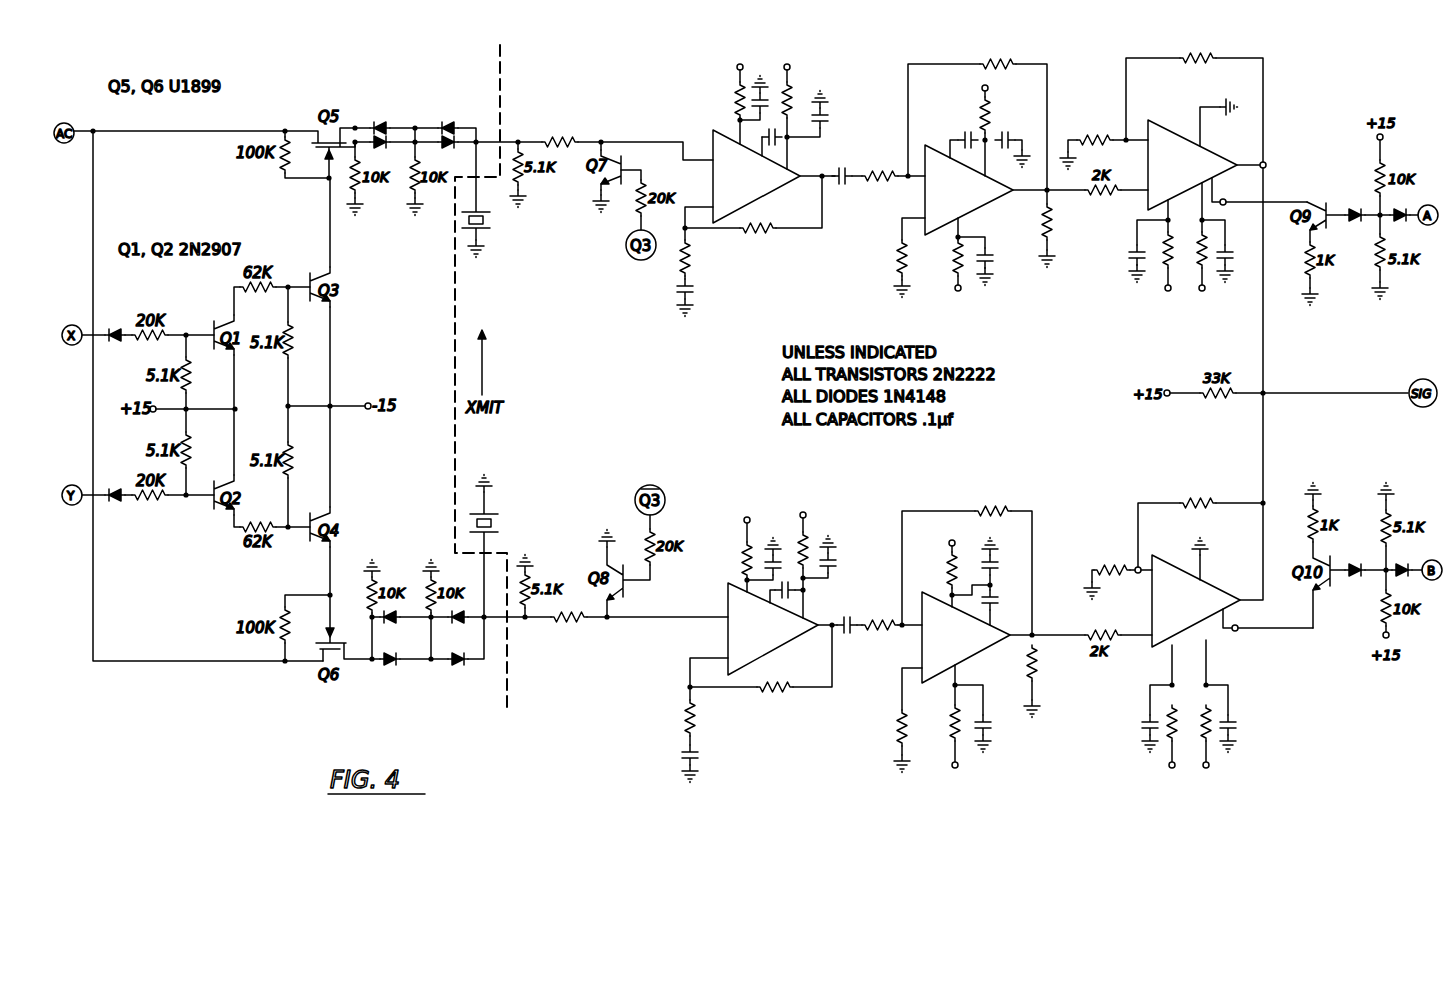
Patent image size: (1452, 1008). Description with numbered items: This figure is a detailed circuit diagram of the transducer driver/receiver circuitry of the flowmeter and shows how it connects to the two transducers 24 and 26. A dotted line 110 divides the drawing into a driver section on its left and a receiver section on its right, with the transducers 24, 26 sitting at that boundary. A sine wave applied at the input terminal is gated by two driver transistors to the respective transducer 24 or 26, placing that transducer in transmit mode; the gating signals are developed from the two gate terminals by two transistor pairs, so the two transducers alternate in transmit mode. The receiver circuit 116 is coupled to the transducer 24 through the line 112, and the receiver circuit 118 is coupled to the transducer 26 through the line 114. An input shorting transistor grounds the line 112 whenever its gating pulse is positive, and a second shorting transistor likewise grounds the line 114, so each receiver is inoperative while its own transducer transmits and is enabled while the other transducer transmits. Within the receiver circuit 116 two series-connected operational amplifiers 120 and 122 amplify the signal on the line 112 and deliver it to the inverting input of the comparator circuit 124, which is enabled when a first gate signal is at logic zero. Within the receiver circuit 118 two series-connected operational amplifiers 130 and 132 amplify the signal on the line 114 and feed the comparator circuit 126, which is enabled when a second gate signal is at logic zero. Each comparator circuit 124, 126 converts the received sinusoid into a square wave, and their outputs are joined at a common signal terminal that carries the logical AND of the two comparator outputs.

The transducer 24 is at (509, 253).
The transducer 26 is at (515, 505).
The dotted line 110 is at (509, 668).
The line 112 is at (636, 141).
The line 114 is at (670, 618).
The receiver circuit 116 is at (862, 197).
The receiver circuit 118 is at (865, 618).
The operational amplifier 120 is at (764, 192).
The operational amplifier 122 is at (985, 204).
The comparator circuit 124 is at (1217, 148).
The comparator circuit 126 is at (1220, 597).
The operational amplifier 130 is at (782, 648).
The operational amplifier 132 is at (965, 652).